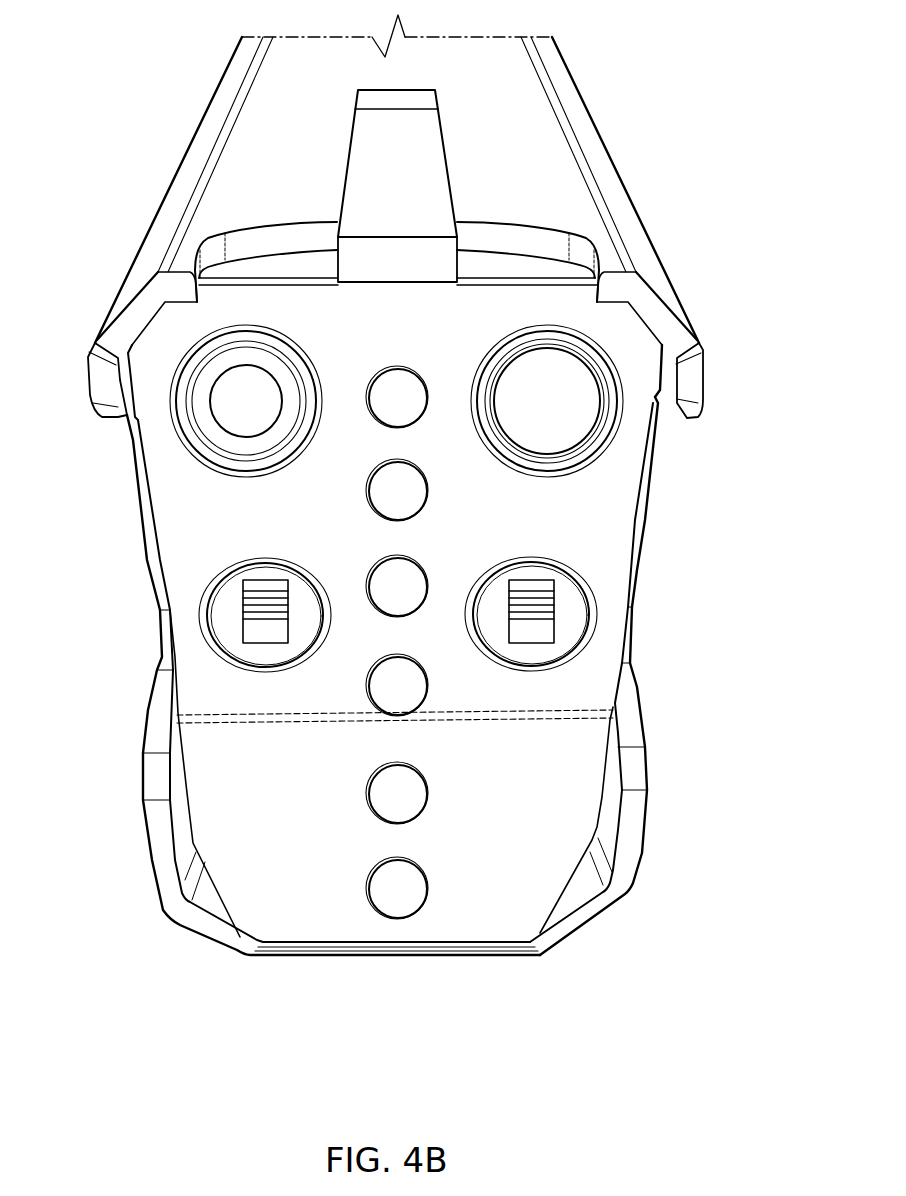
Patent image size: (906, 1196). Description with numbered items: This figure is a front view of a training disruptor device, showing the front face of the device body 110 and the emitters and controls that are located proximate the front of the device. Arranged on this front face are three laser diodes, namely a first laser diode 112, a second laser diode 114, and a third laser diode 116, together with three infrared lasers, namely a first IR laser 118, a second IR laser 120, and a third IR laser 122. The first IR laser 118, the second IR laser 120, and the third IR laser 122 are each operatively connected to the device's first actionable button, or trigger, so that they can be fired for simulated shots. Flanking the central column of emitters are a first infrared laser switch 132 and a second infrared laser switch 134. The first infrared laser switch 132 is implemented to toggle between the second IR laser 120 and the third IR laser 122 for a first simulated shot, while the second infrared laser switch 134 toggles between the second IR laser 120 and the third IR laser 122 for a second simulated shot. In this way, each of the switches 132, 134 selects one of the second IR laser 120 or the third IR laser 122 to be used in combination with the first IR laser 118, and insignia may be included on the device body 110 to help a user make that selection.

The device body 110 is at (634, 207).
The first laser diode 112 is at (395, 480).
The second laser diode 114 is at (400, 696).
The third laser diode 116 is at (397, 893).
The first infrared (IR) laser 118 is at (405, 410).
The second infrared (IR) laser 120 is at (403, 578).
The third infrared (IR) laser 122 is at (400, 793).
The first infrared laser switch 132 is at (246, 602).
The second infrared laser switch 134 is at (548, 610).